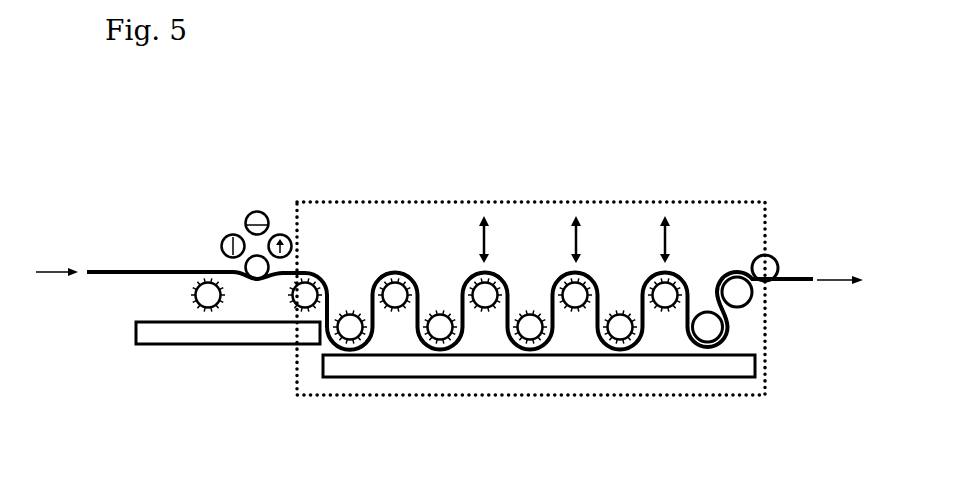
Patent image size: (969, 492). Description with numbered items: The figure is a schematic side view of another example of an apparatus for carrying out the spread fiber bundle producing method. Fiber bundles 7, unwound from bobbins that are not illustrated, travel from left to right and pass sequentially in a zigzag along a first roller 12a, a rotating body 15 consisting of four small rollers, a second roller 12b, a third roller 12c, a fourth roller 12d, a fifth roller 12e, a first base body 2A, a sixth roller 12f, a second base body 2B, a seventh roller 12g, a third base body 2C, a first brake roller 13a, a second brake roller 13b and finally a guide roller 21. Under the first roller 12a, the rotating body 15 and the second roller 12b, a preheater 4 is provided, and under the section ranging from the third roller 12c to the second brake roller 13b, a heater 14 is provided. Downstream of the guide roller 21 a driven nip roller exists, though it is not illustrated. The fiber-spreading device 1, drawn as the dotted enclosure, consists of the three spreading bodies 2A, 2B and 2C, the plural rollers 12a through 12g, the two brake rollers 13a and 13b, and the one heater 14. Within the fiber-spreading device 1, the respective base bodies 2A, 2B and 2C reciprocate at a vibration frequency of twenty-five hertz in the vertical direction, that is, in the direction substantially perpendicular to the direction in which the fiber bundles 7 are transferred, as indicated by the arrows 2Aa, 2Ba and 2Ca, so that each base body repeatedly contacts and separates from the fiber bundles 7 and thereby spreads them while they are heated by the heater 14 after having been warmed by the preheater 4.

The fiber-spreading device 1 is at (448, 202).
The first base body 2A is at (484, 310).
The second base body 2B is at (576, 310).
The third base body 2C is at (664, 310).
The arrow 2Aa is at (487, 248).
The arrow 2Ba is at (579, 248).
The arrow 2Ca is at (669, 248).
The preheater 4 is at (158, 345).
The fiber bundles 7 is at (137, 270).
The first roller 12a is at (206, 312).
The second roller 12b is at (297, 312).
The third roller 12c is at (348, 318).
The fourth roller 12d is at (393, 309).
The fifth roller 12e is at (437, 316).
The sixth roller 12f is at (543, 312).
The seventh roller 12g is at (628, 311).
The first brake roller 13a is at (709, 308).
The second brake roller 13b is at (749, 304).
The heater 14 is at (355, 378).
The rotating body 15 is at (250, 213).
The guide roller 21 is at (772, 257).